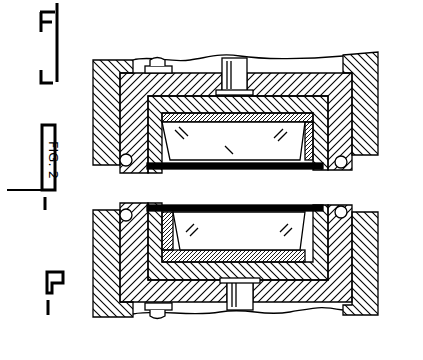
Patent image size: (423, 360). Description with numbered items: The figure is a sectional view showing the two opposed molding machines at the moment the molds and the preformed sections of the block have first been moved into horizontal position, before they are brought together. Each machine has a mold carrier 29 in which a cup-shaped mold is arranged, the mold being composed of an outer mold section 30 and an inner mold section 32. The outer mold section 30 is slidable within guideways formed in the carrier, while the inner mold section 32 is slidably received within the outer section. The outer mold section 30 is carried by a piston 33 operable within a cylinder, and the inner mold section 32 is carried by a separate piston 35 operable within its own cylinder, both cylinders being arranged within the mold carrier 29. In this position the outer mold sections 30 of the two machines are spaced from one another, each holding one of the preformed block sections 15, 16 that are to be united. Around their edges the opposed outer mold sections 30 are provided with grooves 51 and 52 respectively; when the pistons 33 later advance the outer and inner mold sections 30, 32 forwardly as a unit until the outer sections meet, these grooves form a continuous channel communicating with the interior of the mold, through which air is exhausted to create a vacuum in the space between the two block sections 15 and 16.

The block section 15 is at (259, 128).
The block section 16 is at (217, 255).
The mold carrier 29 is at (379, 92).
The outer mold section 30 is at (300, 80).
The inner mold section 32 is at (190, 97).
The piston 33 is at (156, 60).
The piston 35 is at (237, 57).
The groove 51 is at (120, 162).
The groove 52 is at (120, 212).